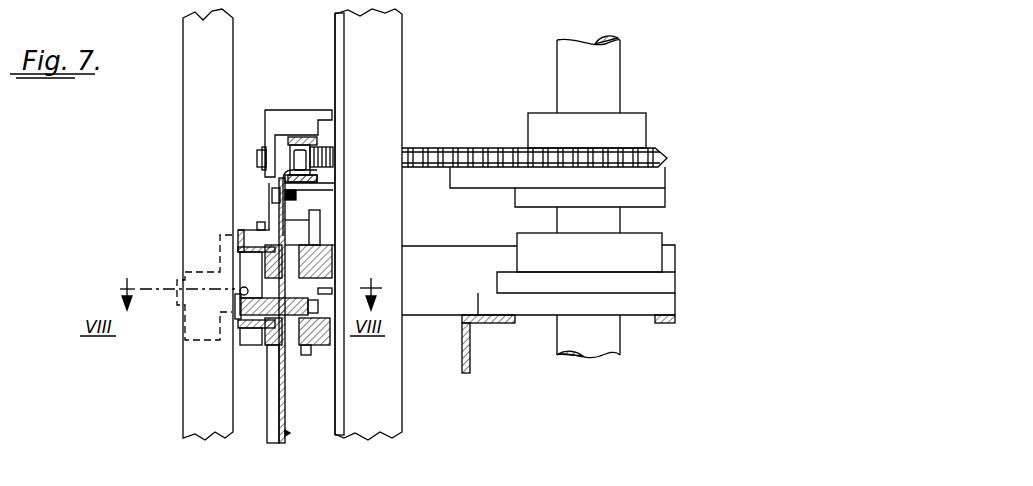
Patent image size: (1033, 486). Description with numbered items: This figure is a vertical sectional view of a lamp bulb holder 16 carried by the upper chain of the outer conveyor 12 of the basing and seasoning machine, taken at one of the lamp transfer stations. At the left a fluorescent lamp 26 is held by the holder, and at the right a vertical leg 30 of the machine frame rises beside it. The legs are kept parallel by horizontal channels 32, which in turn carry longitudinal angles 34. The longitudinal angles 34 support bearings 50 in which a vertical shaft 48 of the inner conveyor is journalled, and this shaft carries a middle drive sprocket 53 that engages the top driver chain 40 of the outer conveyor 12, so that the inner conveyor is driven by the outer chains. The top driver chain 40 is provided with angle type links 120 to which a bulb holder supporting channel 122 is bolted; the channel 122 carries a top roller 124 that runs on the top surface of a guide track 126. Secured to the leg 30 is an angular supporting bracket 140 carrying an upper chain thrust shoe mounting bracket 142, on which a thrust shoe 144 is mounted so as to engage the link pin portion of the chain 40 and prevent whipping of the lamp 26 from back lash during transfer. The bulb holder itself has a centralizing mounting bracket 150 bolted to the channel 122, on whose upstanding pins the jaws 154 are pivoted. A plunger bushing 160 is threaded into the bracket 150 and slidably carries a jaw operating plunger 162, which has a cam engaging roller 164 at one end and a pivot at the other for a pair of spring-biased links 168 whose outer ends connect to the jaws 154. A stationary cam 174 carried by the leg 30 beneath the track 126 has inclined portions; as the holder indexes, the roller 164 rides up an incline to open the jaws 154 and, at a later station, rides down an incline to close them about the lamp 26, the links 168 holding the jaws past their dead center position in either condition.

The fluorescent lamp 26 is at (188, 186).
The vertical leg 30 is at (390, 420).
The angular supporting bracket 140 is at (337, 56).
The upper chain thrust shoe mounting bracket 142 is at (273, 134).
The outer conveyor 12 is at (302, 134).
The top driver chain 40 is at (322, 143).
The thrust shoe 144 is at (280, 152).
The angle type link 120 is at (325, 183).
The bulb holder supporting channel 122 is at (286, 414).
The top roller 124 is at (315, 220).
The guide track 126 is at (328, 250).
The cam engaging roller 164 is at (340, 285).
The stationary cam 174 is at (345, 282).
The links 168 is at (240, 300).
The centralizing mounting bracket 150 is at (250, 345).
The plunger bushing 160 is at (294, 330).
The jaw operating plunger 162 is at (320, 322).
The jaws 154 is at (180, 276).
The lamp bulb holder 16 is at (290, 433).
The middle drive sprocket 53 is at (495, 148).
The horizontal channel 32 is at (468, 246).
The bearing 50 is at (638, 242).
The vertical shaft 48 is at (598, 350).
The longitudinal angle 34 is at (472, 362).